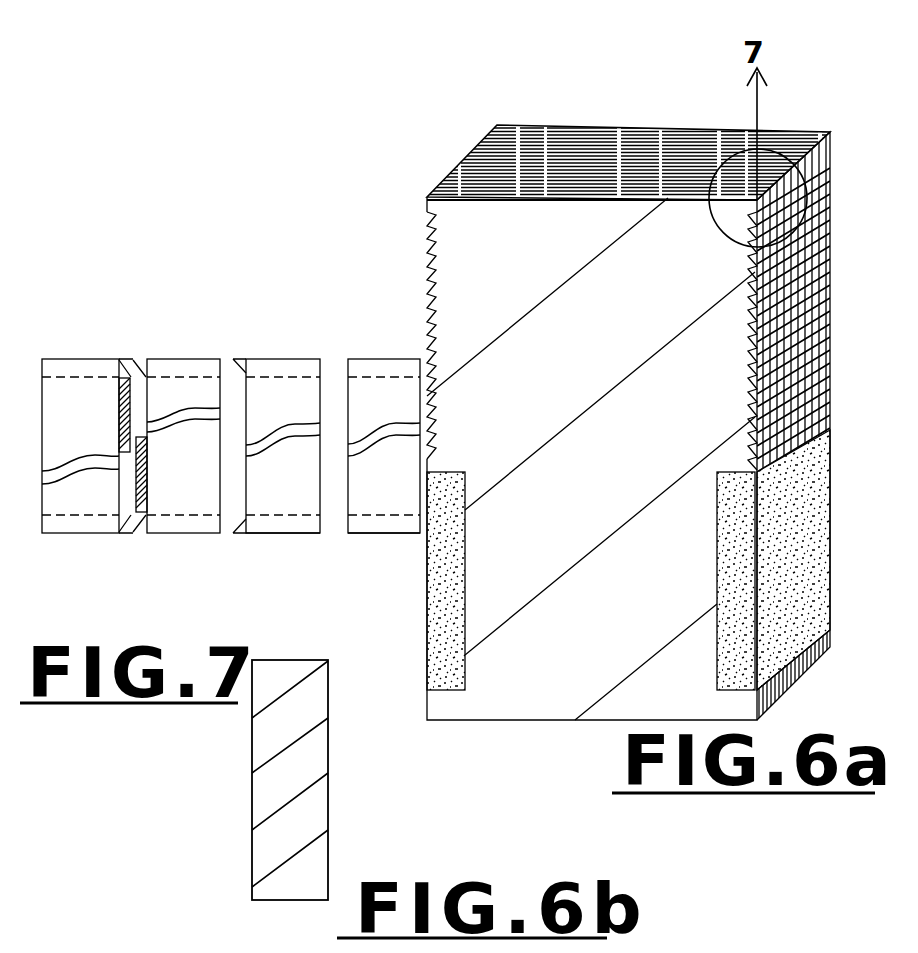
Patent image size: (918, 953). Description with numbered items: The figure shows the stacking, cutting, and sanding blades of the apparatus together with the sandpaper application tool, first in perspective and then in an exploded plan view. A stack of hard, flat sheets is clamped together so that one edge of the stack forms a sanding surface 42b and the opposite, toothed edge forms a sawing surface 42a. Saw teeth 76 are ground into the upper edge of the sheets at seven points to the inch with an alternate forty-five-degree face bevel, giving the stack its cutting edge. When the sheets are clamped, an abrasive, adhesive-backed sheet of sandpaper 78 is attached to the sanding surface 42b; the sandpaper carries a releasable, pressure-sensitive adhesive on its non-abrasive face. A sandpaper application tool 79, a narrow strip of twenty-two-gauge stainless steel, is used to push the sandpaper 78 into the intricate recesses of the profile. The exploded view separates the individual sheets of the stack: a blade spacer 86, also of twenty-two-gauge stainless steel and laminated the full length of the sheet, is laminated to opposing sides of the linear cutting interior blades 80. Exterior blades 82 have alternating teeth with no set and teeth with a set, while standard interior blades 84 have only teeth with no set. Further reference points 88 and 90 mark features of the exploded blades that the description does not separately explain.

In FIG. 6a, the sawing surface 42a is at (512, 210).
In FIG. 6a, the sanding surface 42b is at (788, 585).
In FIG. 6a, the saw teeth 76 is at (802, 270).
In FIG. 6a, the sandpaper 78 is at (447, 650).
In FIG. 6b, the sandpaper application tool 79 is at (290, 770).
In FIG. 7, the linear cutting interior blades 80 is at (179, 356).
In FIG. 7, the exterior blades 82 is at (281, 357).
In FIG. 7, the standard interior blades 84 is at (376, 357).
In FIG. 7, the blade spacer 86 is at (139, 488).
In FIG. 7, the corner chamfer 88 is at (237, 528).
In FIG. 7, the panel bottom edges 90 is at (410, 526).